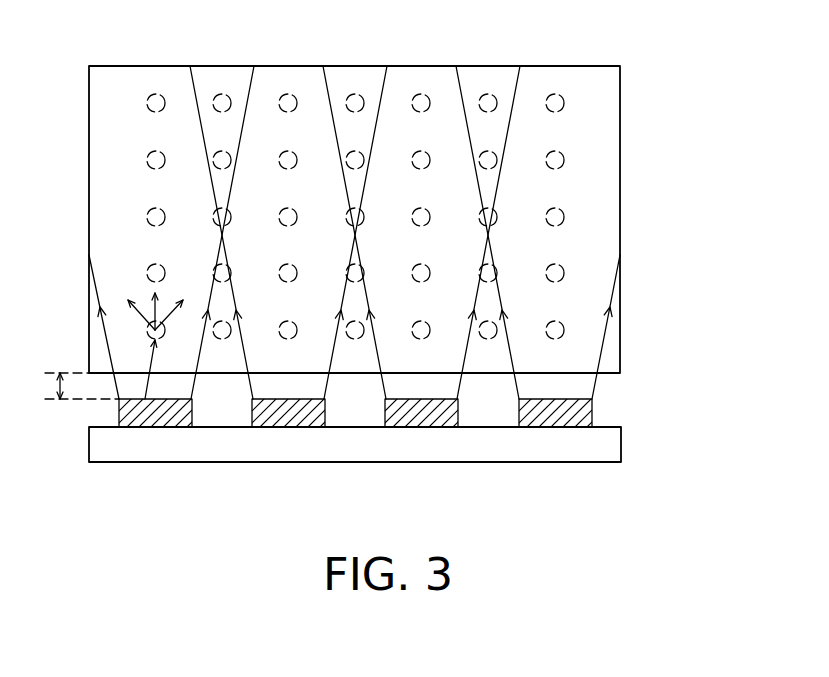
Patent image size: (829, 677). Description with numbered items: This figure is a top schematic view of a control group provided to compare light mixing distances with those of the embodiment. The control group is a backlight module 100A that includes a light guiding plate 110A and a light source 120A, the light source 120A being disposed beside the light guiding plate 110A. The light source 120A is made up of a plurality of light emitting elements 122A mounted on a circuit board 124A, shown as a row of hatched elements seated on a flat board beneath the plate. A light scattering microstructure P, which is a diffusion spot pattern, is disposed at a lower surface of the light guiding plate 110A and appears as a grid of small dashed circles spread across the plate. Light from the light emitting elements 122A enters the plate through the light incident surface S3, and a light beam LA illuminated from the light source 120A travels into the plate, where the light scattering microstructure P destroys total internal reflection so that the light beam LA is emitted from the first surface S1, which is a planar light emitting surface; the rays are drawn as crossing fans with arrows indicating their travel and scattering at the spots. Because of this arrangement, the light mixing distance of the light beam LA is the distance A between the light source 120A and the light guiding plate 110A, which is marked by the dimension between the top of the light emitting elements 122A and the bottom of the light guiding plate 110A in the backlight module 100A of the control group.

The backlight module 100A is at (403, 285).
The light guiding plate 110A is at (607, 128).
The light source 120A is at (429, 425).
The light emitting elements 122A is at (582, 415).
The circuit board 124A is at (397, 444).
The light scattering microstructure P is at (157, 100).
The light beam LA is at (354, 232).
The first surface S1 is at (650, 195).
The light incident surface S3 is at (223, 485).
The distance A is at (78, 384).